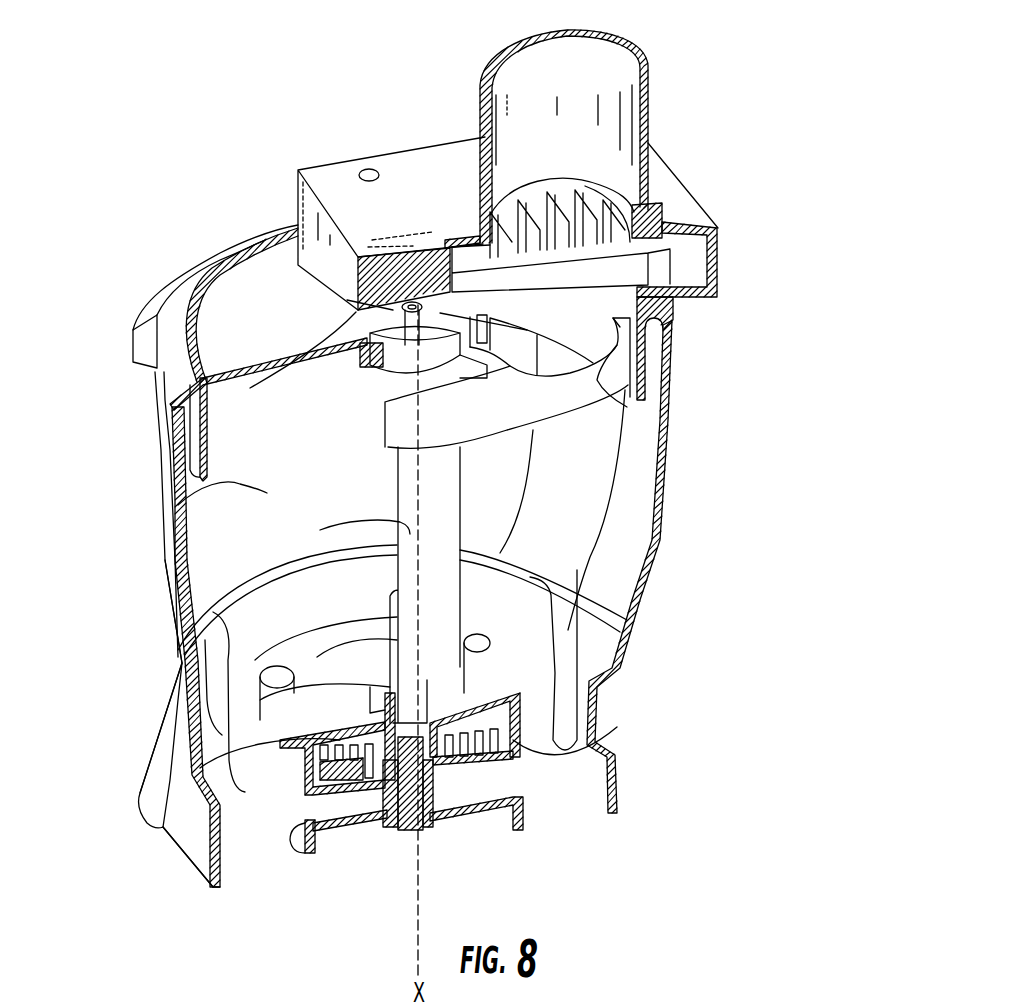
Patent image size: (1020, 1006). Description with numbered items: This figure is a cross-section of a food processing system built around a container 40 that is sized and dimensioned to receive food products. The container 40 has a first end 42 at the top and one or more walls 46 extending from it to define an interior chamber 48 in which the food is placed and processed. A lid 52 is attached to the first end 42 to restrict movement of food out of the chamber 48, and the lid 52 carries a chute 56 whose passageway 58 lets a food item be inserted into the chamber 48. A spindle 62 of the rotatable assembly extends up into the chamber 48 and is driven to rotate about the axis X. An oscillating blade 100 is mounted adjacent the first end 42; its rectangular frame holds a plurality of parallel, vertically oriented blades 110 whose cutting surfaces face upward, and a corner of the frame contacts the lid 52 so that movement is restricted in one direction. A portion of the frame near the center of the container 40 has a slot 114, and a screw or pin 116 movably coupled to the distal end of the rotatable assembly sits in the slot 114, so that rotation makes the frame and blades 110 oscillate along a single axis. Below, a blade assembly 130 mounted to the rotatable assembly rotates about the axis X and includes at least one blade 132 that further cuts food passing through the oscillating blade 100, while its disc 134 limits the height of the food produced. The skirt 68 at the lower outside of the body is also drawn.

The container 40 is at (667, 497).
The first end 42 is at (190, 851).
The wall 46 is at (670, 423).
The interior chamber 48 is at (178, 505).
The lid 52 is at (253, 275).
The chute 56 is at (480, 125).
The passageway 58 is at (613, 62).
The spindle 62 is at (397, 507).
The skirt 68 is at (173, 720).
The oscillating blade 100 is at (677, 263).
The blades 110 is at (557, 190).
The slot 114 is at (357, 300).
The screw or pin 116 is at (170, 430).
The blade assembly 130 is at (653, 360).
The blade 132 is at (558, 408).
The disc 134 is at (523, 433).